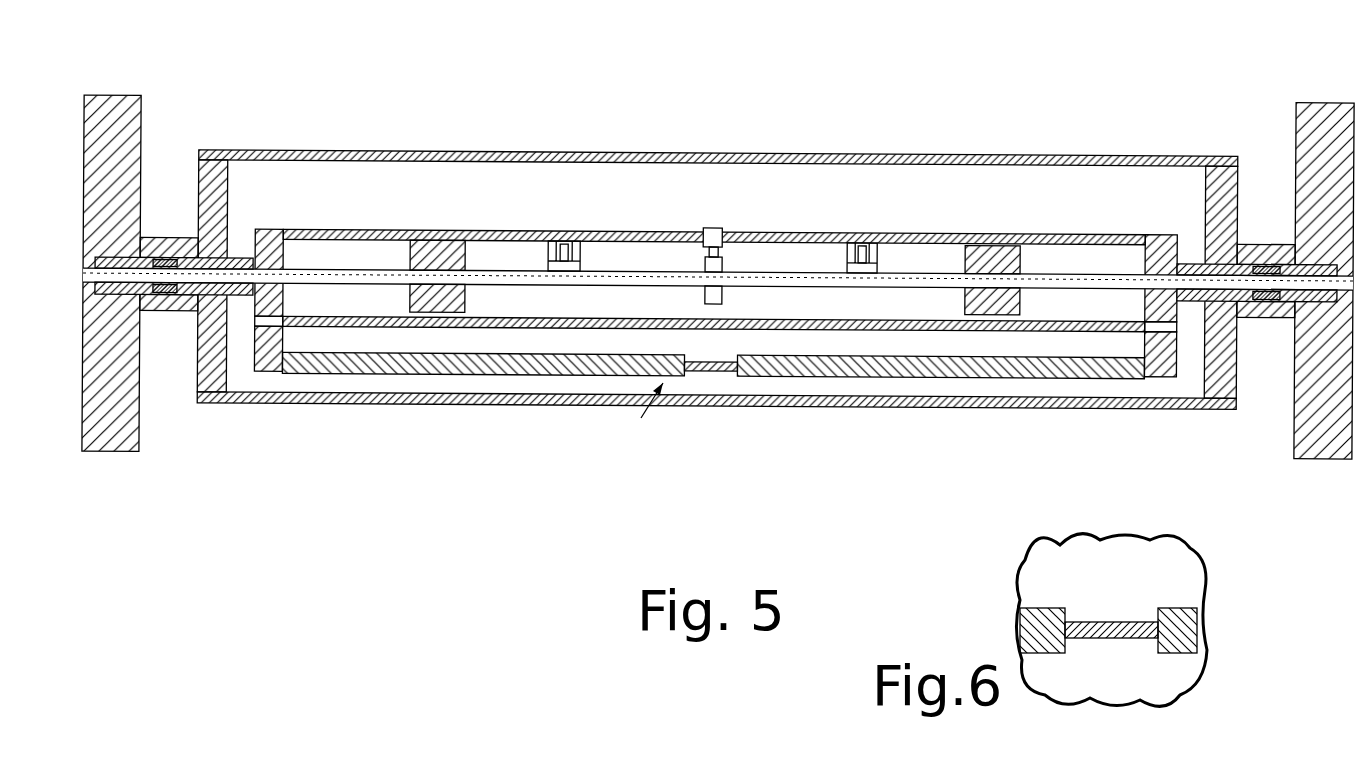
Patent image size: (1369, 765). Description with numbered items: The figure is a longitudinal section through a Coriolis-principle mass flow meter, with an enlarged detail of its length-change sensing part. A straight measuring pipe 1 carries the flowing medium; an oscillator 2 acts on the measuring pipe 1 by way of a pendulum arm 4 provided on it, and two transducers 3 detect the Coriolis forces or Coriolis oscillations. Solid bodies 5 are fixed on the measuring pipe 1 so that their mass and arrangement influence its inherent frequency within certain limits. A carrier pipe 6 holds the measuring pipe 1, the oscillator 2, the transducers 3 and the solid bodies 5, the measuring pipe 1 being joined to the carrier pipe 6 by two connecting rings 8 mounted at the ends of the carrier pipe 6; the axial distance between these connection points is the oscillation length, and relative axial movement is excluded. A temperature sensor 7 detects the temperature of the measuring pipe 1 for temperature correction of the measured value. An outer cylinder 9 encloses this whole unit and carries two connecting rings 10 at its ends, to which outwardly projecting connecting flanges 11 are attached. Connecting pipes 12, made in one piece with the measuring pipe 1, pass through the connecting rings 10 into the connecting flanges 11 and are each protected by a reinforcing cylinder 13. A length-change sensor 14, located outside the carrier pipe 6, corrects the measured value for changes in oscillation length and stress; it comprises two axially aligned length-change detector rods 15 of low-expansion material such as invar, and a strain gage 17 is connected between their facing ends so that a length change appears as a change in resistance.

In FIG. 5, the measuring pipe 1 is at (640, 277).
In FIG. 5, the oscillator 2 is at (726, 242).
In FIG. 5, the transducers 3 is at (563, 242).
In FIG. 5, the pendulum arm 4 is at (705, 240).
In FIG. 5, the solid bodies 5 is at (440, 244).
In FIG. 5, the carrier pipe 6 is at (383, 323).
In FIG. 5, the temperature sensor 7 is at (160, 257).
In FIG. 5, the connecting rings 8 is at (283, 320).
In FIG. 5, the outer cylinder 9 is at (333, 152).
In FIG. 5, the connecting rings 10 is at (222, 208).
In FIG. 5, the connecting flanges 11 is at (110, 448).
In FIG. 5, the connecting pipes 12 is at (182, 290).
In FIG. 5, the reinforcing cylinder 13 is at (180, 257).
In FIG. 5, the length-change sensor 14 is at (640, 420).
In FIG. 5, the length-change detector rods 15 is at (503, 365).
In FIG. 6, the length-change detector rods 15 is at (1045, 608).
In FIG. 5, the strain gage 17 is at (713, 372).
In FIG. 6, the strain gage 17 is at (1110, 640).